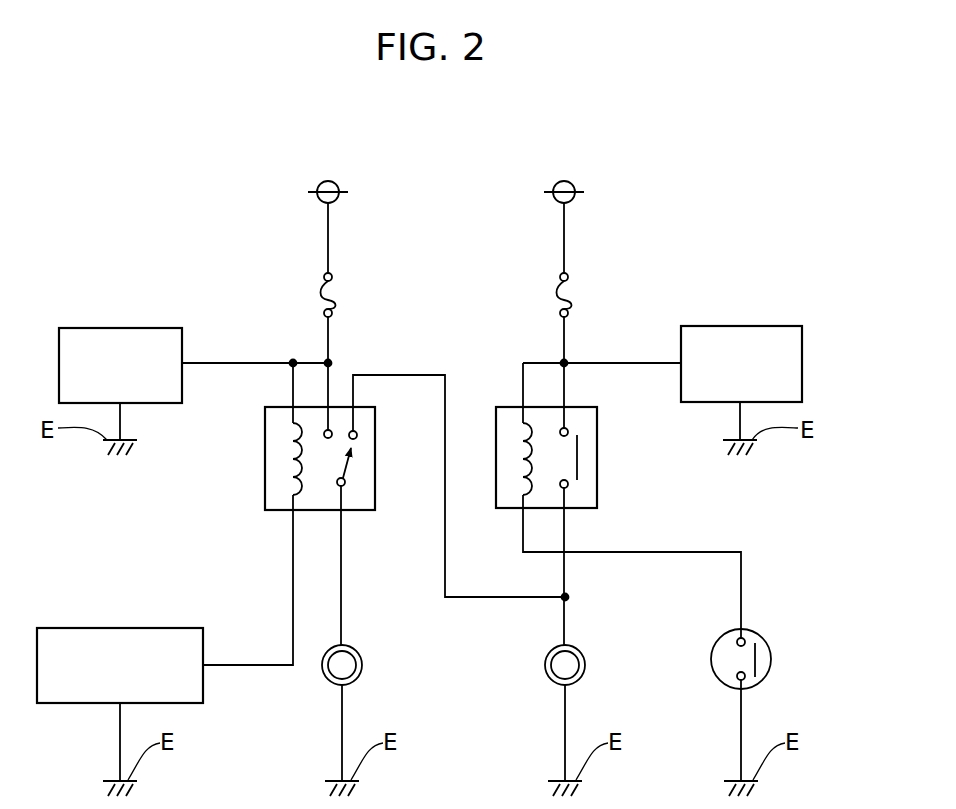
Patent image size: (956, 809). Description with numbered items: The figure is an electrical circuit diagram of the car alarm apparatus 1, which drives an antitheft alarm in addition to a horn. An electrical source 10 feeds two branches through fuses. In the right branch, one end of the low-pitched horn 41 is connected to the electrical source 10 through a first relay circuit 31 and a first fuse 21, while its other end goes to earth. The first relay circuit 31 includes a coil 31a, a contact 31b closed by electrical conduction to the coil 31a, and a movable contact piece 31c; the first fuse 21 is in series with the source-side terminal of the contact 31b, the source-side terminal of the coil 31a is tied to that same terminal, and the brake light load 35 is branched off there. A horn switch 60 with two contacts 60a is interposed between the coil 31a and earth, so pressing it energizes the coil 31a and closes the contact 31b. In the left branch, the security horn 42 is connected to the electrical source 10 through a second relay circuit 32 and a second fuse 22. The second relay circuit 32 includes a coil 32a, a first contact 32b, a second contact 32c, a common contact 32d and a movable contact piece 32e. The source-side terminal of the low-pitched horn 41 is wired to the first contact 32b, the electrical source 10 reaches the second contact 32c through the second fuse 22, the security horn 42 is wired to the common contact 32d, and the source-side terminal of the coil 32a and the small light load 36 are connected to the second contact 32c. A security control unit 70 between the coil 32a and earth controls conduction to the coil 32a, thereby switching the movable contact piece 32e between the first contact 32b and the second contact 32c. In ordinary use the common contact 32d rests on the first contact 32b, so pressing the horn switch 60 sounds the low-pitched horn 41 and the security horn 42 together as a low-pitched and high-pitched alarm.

The car alarm apparatus 1 is at (203, 197).
The electrical source 10 is at (338, 185).
The first fuse 21 is at (569, 296).
The second fuse 22 is at (333, 296).
The first relay circuit 31 is at (599, 495).
The coil 31a is at (513, 447).
The contact 31b is at (568, 430).
The movable contact piece 31c is at (580, 460).
The second relay circuit 32 is at (368, 500).
The coil 32a is at (285, 452).
The first contact 32b is at (357, 432).
The second contact 32c is at (330, 430).
The common contact 32d is at (345, 485).
The movable contact piece 32e is at (350, 466).
The brake light load 35 is at (740, 326).
The small light load 36 is at (118, 328).
The low-pitched horn 41 is at (575, 650).
The security horn 42 is at (352, 650).
The horn switch 60 is at (742, 676).
The contacts 60a is at (737, 642).
The security control unit 70 is at (118, 628).